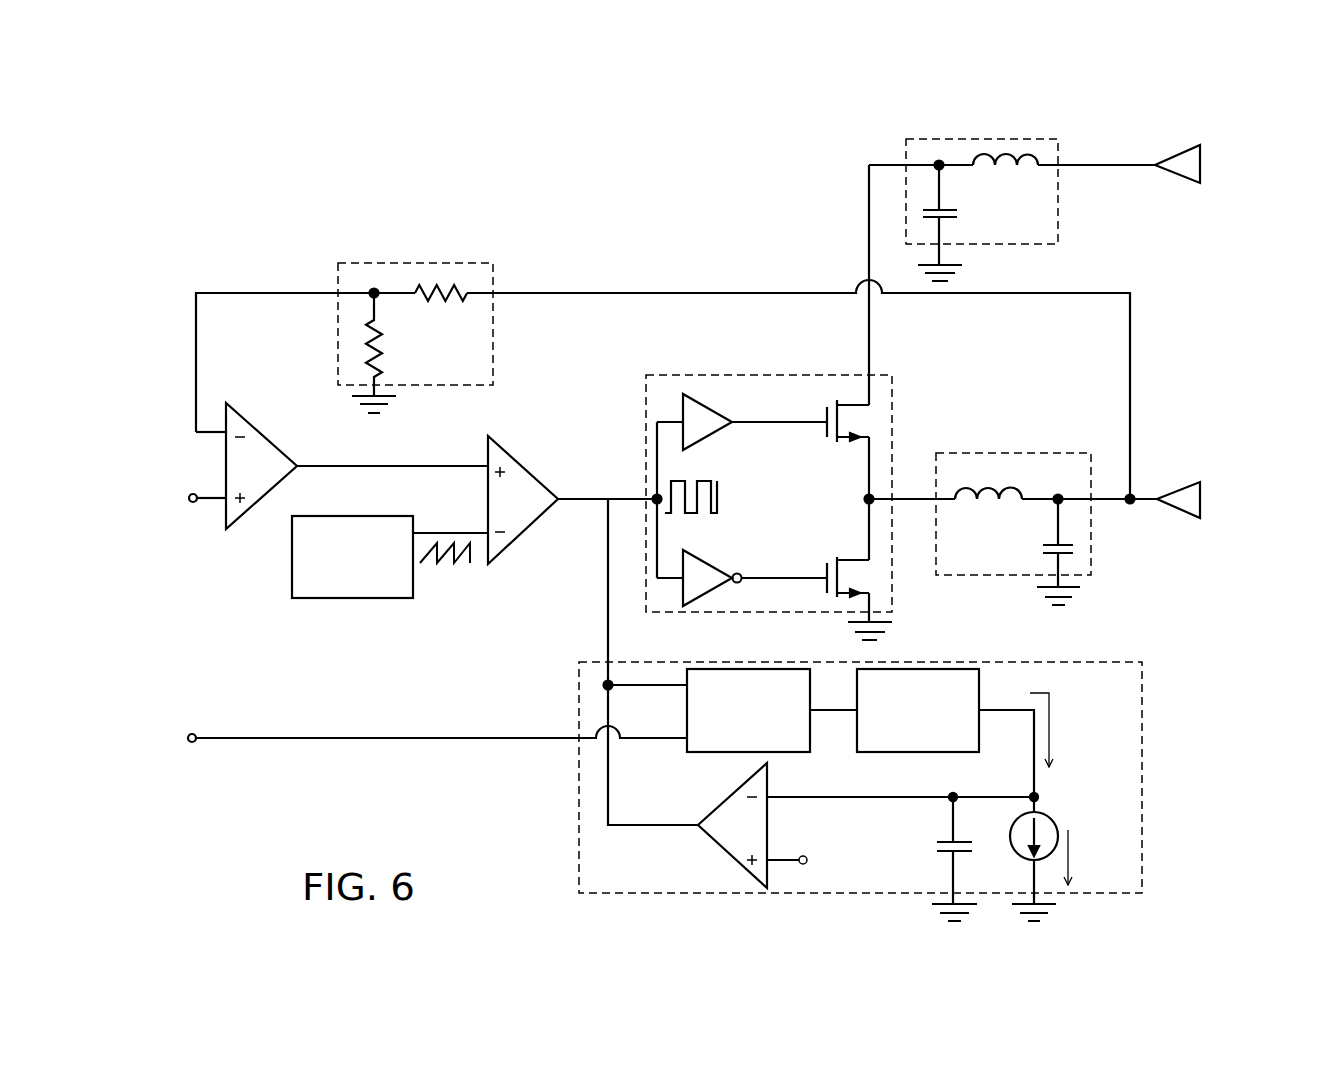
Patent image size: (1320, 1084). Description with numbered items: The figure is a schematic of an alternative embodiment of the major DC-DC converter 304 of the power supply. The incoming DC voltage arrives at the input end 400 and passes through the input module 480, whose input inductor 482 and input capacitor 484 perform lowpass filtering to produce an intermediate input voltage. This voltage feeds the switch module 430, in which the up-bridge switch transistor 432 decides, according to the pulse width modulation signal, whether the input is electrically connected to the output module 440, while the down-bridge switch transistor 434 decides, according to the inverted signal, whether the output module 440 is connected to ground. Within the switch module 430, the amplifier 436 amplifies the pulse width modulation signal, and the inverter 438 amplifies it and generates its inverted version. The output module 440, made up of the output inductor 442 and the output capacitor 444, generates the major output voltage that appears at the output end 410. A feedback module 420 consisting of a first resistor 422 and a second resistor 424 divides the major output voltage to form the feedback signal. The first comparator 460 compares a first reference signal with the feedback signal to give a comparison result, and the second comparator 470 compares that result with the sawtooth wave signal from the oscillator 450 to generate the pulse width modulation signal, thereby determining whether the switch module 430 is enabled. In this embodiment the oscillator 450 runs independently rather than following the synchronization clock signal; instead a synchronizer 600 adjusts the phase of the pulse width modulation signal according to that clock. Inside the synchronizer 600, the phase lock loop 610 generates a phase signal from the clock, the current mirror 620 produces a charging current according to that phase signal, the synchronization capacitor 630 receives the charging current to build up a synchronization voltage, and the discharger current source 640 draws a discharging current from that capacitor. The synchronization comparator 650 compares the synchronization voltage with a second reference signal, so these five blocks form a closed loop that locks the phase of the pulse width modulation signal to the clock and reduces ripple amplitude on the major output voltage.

The major DC-DC converter 304 is at (277, 193).
The input end 400 is at (1178, 150).
The output end 410 is at (1177, 487).
The feedback module 420 is at (423, 327).
The first resistor 422 is at (450, 308).
The second resistor 424 is at (395, 353).
The switch module 430 is at (770, 491).
The up-bridge switch transistor 432 is at (866, 422).
The down-bridge switch transistor 434 is at (866, 577).
The amplifier 436 is at (708, 402).
The inverter 438 is at (700, 558).
The output module 440 is at (1026, 511).
The output inductor 442 is at (990, 477).
The output capacitor 444 is at (1035, 548).
The oscillator 450 is at (380, 598).
The first comparator 460 is at (252, 422).
The second comparator 470 is at (515, 455).
The input module 480 is at (989, 196).
The input inductor 482 is at (1013, 180).
The input capacitor 484 is at (962, 212).
The synchronizer 600 is at (874, 780).
The phase lock loop 610 is at (750, 669).
The current mirror 620 is at (955, 669).
The synchronization capacitor 630 is at (935, 847).
The discharger current source 640 is at (1052, 812).
The synchronization comparator 650 is at (737, 790).